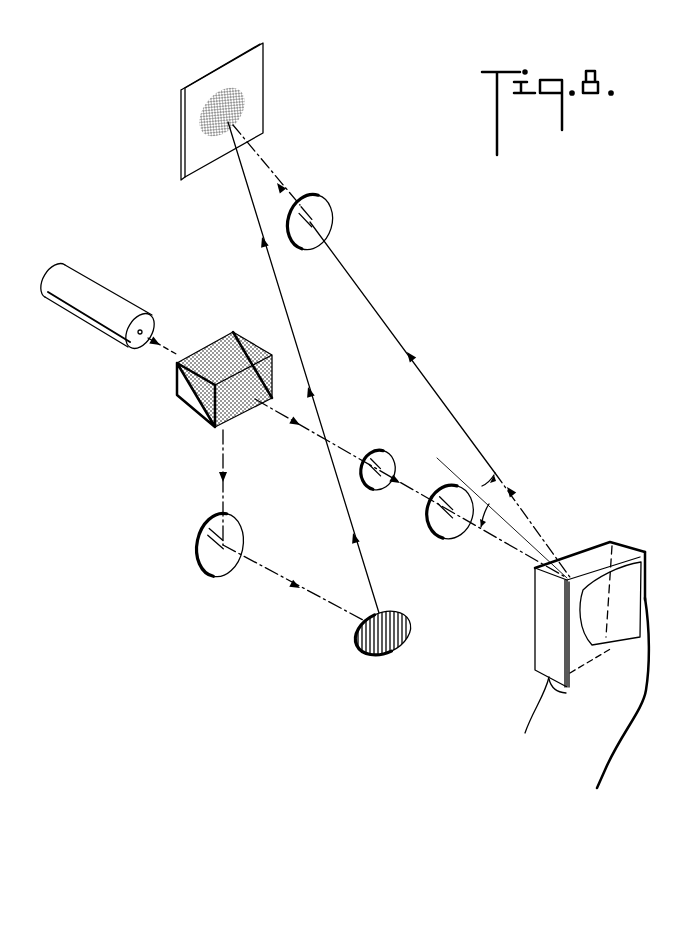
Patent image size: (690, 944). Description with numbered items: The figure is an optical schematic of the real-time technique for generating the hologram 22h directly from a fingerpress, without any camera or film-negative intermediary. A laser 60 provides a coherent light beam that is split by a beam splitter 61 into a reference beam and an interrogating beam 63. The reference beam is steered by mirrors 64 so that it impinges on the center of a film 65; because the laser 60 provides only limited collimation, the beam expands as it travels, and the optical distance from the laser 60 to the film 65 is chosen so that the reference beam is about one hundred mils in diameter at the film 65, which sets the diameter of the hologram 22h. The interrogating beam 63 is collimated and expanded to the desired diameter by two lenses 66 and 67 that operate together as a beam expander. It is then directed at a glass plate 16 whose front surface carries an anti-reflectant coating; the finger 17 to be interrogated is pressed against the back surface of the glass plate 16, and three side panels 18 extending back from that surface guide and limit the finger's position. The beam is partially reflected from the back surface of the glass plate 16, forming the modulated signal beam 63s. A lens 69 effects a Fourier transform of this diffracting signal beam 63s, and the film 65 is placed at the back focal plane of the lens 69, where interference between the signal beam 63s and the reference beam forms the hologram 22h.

The glass plate 16 is at (548, 635).
The finger 17 is at (647, 674).
The side panels 18 is at (617, 541).
The hologram 22h is at (240, 108).
The laser 60 is at (87, 330).
The beam splitter 61 is at (182, 398).
The interrogating beam 63 is at (292, 423).
The signal beam 63s is at (357, 288).
The mirrors 64 is at (200, 552).
The film 65 is at (257, 72).
The lens 66 is at (372, 485).
The lens 67 is at (443, 487).
The lens 69 is at (333, 212).